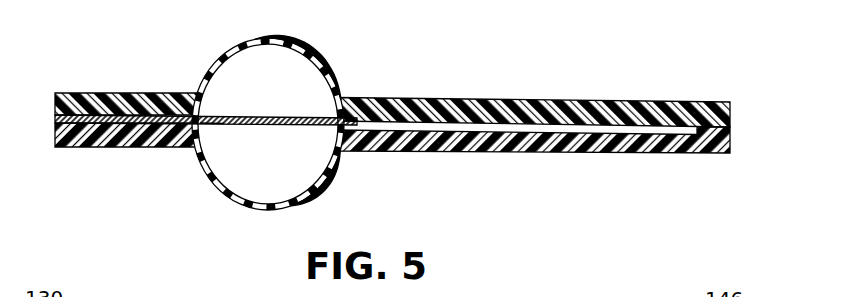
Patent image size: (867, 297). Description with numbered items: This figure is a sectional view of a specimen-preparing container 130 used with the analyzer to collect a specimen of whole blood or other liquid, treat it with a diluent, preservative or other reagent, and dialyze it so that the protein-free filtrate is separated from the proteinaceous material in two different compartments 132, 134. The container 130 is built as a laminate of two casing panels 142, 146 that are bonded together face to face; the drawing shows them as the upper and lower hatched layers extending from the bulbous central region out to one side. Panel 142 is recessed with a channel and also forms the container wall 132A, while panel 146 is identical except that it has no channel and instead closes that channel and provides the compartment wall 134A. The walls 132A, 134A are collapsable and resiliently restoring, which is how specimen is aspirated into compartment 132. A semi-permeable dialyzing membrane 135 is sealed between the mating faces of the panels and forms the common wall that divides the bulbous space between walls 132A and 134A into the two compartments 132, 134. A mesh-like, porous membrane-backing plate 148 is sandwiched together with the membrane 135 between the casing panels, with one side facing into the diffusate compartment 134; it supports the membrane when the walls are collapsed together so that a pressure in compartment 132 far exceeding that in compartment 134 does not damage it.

The container 130 is at (417, 109).
The compartment 132 is at (284, 164).
The collapsable and resiliently-restoring wall 132A is at (314, 192).
The compartment 134 is at (284, 103).
The collapsable and resiliently-restoring wall 134A is at (274, 38).
The semi-permeable dialyzing membrane 135 is at (222, 127).
The casing panel 142 is at (732, 146).
The casing panel 146 is at (731, 103).
The membrane-backing plate 148 is at (316, 118).